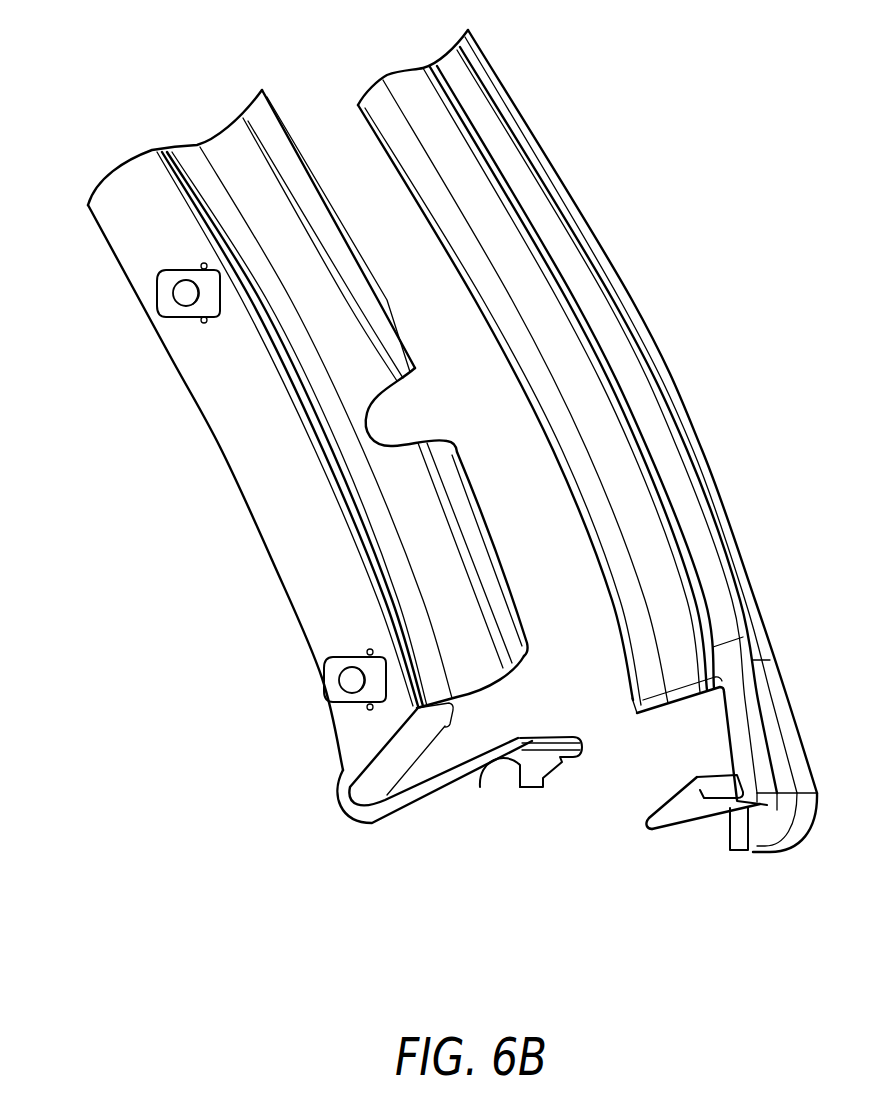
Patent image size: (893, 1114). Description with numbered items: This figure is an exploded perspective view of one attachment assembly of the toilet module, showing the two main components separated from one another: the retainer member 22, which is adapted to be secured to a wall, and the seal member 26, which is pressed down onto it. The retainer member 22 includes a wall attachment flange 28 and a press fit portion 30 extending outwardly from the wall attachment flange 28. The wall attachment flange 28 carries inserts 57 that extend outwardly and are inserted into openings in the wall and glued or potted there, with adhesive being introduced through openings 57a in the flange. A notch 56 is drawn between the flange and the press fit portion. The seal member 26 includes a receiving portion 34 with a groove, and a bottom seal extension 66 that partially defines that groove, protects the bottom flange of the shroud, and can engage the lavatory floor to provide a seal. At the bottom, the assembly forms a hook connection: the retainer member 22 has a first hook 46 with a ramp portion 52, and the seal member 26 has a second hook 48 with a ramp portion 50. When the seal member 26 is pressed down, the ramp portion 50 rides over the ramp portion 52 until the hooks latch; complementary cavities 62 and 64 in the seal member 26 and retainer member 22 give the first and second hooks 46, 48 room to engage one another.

The retainer member 22 is at (133, 193).
The seal member 26 is at (407, 88).
The wall attachment flange 28 is at (250, 443).
The press fit portion 30 is at (432, 515).
The receiving portion 34 is at (678, 415).
The first hook 46 is at (500, 758).
The second hook 48 is at (663, 817).
The ramp portion 50 is at (663, 797).
The ramp portion 52 is at (540, 773).
The notch 56 is at (410, 413).
The inserts 57 is at (160, 292).
The openings 57a is at (200, 263).
The cavity 62 is at (450, 753).
The cavity 64 is at (712, 743).
The bottom seal extension 66 is at (740, 850).